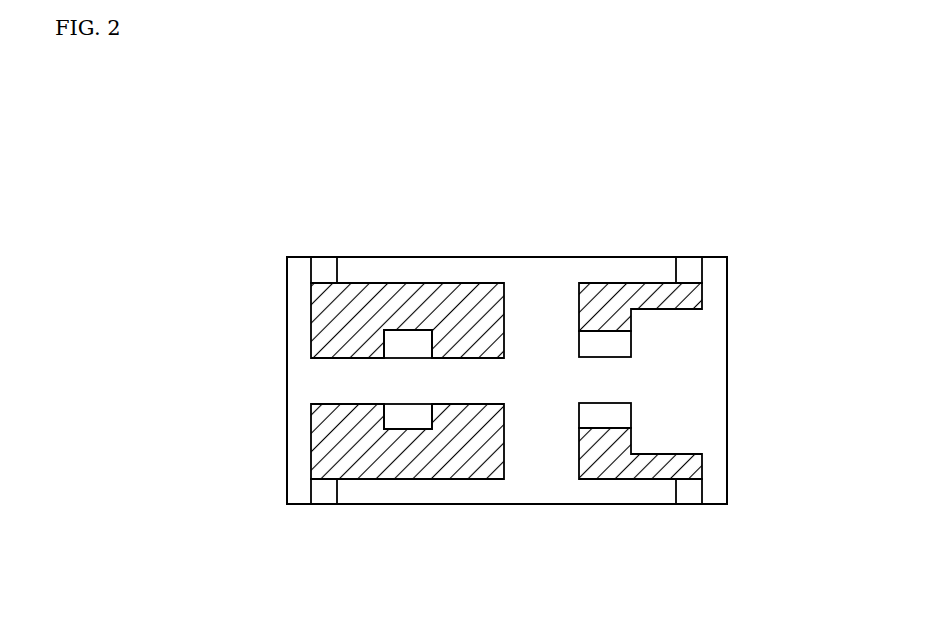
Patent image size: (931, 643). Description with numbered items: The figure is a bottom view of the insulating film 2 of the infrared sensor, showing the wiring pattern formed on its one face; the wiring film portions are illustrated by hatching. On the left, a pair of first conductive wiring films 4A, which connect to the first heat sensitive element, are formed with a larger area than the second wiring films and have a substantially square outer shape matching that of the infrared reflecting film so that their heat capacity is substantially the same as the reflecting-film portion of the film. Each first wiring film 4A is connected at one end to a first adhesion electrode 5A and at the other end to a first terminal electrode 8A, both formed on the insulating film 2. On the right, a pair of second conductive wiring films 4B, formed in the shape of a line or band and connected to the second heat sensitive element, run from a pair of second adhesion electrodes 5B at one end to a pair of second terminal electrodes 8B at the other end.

The insulating film 2 is at (727, 340).
The first conductive wiring film 4A is at (418, 292).
The second conductive wiring film 4B is at (628, 289).
The first adhesion electrode 5A is at (425, 343).
The second adhesion electrode 5B is at (597, 347).
The first terminal electrode 8A is at (328, 265).
The second terminal electrode 8B is at (690, 265).